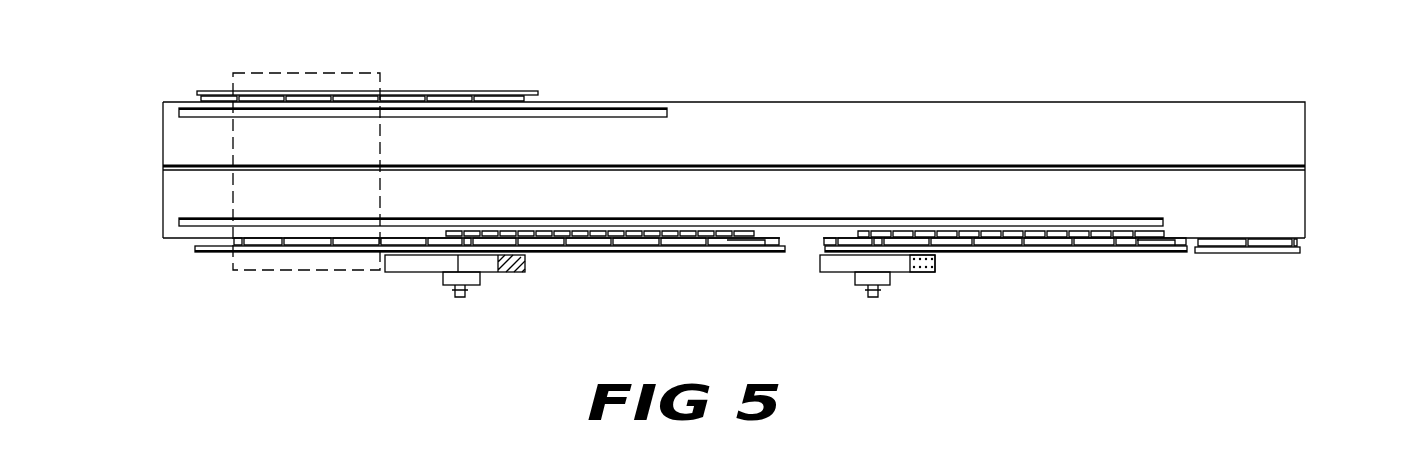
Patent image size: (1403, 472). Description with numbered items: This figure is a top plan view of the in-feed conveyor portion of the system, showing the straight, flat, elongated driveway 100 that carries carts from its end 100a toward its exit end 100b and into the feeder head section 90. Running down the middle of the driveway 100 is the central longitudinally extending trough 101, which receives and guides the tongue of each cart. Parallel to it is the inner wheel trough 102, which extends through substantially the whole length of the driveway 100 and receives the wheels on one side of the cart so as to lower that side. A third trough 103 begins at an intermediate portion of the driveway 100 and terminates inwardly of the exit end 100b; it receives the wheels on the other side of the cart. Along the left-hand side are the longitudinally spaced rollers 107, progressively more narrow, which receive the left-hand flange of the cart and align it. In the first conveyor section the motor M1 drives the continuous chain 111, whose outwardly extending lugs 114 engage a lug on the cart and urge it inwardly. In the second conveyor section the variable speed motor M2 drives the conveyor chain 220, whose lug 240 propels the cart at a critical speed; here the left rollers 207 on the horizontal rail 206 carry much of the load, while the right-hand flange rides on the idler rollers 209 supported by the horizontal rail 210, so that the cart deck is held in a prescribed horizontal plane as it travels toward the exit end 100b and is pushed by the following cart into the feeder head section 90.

The feeder head section 90 is at (385, 62).
The driveway 100 is at (780, 112).
The first end of substrate 100a is at (1292, 152).
The exit end 100b is at (183, 156).
The central trough 101 is at (838, 163).
The inner wheel trough 102 is at (827, 222).
The third trough 103 is at (573, 117).
The rollers 107 is at (830, 240).
The continuous chain 111 is at (947, 232).
The lugs 114 is at (1048, 235).
The horizontal rail 206 is at (545, 243).
The left rollers 207 is at (573, 243).
The idler rollers 209 is at (533, 100).
The horizontal rail 210 is at (463, 91).
The conveyor chain 220 is at (532, 232).
The lug 240 is at (582, 233).
The motor M1 is at (888, 284).
The variable speed motor M2 is at (480, 284).